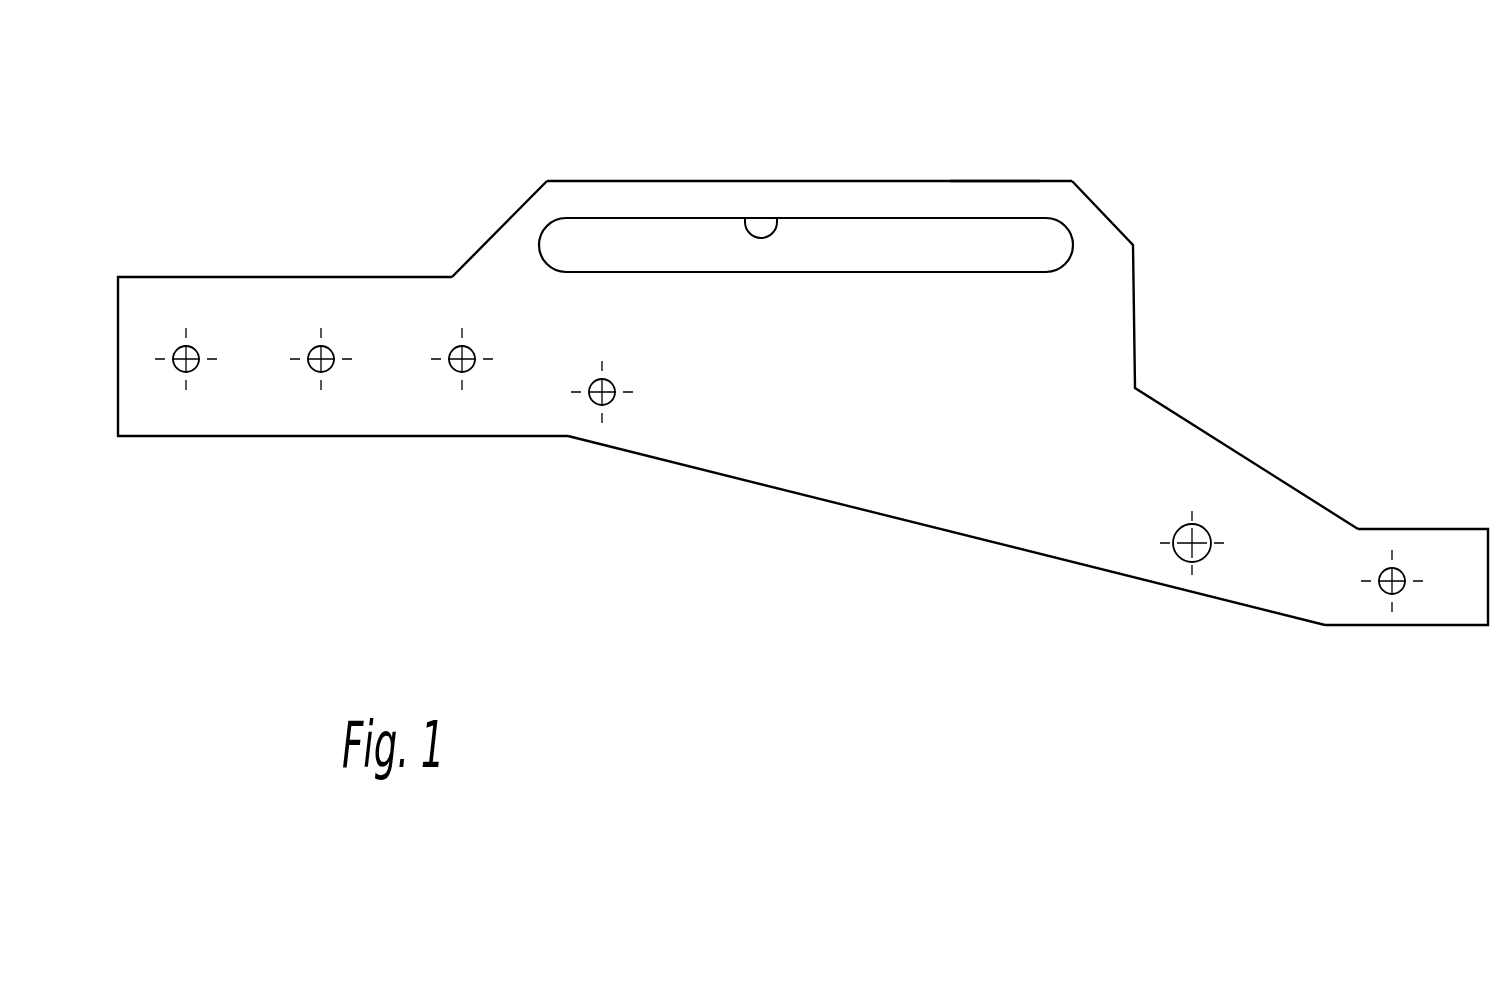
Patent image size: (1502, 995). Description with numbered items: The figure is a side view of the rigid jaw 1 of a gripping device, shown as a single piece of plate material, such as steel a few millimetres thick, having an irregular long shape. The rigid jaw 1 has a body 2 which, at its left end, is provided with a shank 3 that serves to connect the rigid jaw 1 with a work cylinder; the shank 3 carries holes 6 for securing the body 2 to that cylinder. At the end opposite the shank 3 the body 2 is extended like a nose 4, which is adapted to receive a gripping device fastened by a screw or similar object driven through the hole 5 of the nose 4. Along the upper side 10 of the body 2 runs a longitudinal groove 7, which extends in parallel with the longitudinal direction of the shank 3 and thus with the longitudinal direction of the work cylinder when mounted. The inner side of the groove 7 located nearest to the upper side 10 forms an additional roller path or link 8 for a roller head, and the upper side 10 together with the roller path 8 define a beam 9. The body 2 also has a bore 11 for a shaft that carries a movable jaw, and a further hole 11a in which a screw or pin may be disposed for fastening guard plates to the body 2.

The rigid jaw 1 is at (1131, 199).
The body 2 is at (863, 453).
The shank 3 is at (264, 412).
The nose 4 is at (1455, 556).
The hole 5 is at (1385, 568).
The holes 6 is at (453, 346).
The longitudinal groove 7 is at (866, 238).
The link 8 is at (745, 218).
The beam 9 is at (993, 199).
The upper side 10 is at (630, 181).
The bore 11 is at (608, 402).
The hole 11a is at (1178, 557).